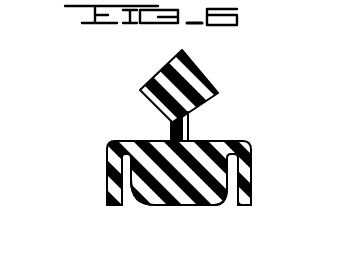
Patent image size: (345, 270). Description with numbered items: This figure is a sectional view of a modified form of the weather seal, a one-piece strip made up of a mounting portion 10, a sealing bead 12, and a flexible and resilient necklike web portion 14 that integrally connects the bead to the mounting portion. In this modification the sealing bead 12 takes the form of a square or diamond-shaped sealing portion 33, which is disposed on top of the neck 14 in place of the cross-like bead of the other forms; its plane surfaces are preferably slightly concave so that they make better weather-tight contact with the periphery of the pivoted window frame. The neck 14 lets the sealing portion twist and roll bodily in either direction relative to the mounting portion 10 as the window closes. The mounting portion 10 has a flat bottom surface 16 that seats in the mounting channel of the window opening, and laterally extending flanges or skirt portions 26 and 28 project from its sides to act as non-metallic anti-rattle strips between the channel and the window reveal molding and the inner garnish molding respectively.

The mounting portion 10 is at (224, 207).
The sealing bead 12 is at (201, 115).
The necklike web portion 14 is at (191, 133).
The flat bottom surface 16 is at (177, 206).
The skirt portion 26 is at (108, 191).
The skirt portion 28 is at (252, 189).
The diamond-shaped sealing portion 33 is at (197, 77).